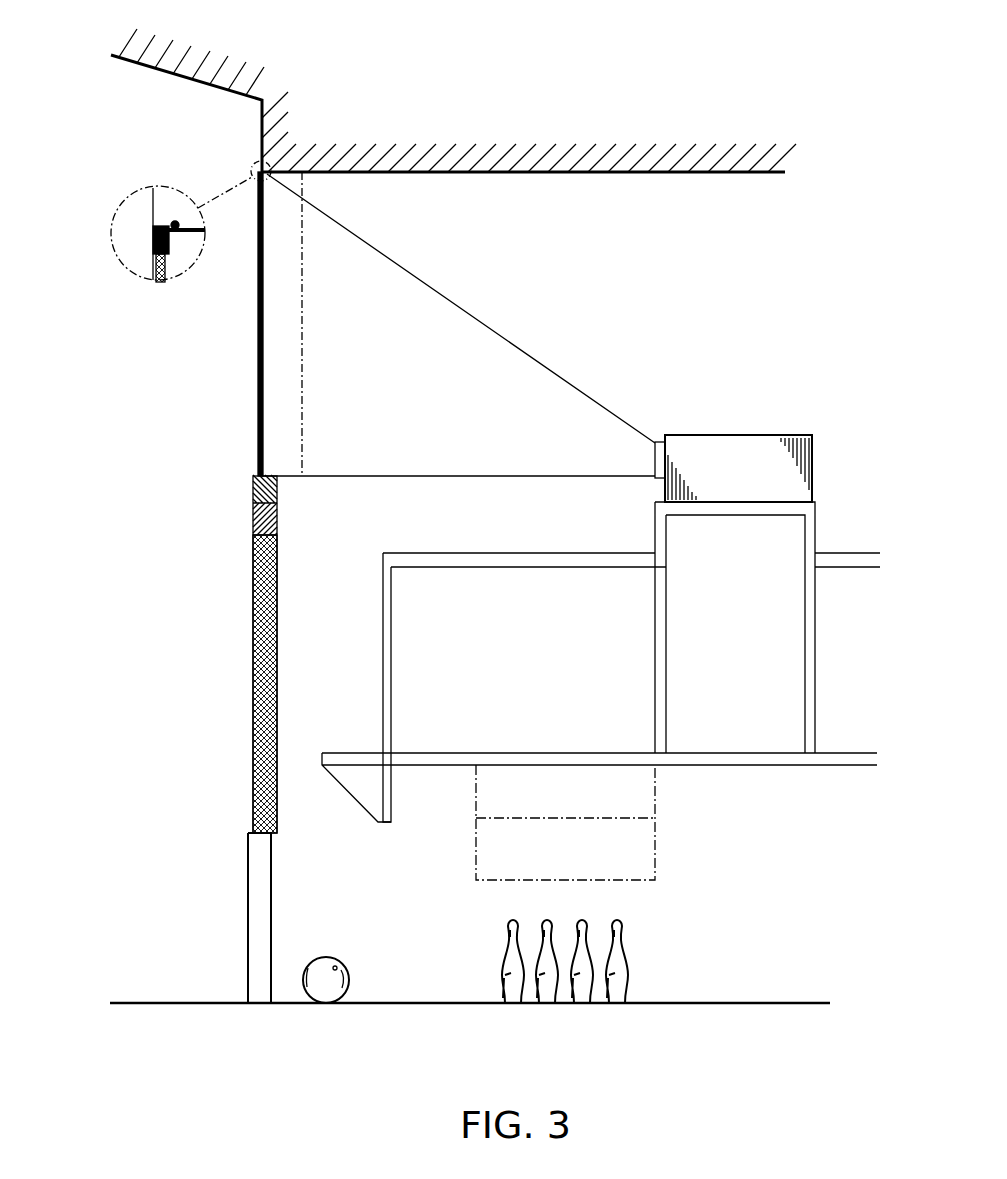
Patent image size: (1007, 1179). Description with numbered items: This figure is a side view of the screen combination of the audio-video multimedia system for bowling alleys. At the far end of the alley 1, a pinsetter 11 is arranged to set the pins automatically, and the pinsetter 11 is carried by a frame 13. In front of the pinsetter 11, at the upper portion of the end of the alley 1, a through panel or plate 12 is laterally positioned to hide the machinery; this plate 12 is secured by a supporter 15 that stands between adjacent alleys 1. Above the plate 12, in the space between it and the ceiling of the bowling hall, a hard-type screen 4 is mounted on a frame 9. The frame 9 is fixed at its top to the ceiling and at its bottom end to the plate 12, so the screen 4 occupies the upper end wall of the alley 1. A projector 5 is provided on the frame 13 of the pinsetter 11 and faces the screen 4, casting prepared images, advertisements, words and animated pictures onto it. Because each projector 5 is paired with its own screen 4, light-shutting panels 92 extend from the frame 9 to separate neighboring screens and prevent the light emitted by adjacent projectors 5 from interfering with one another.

The alley 1 is at (157, 1003).
The screen 4 is at (258, 342).
The projector 5 is at (733, 434).
The frame 9 is at (152, 238).
The pinsetter 11 is at (655, 810).
The through panel 12 is at (252, 683).
The frame of the pinsetter 13 is at (655, 633).
The supporter 15 is at (247, 865).
The light-shutting panel 92 is at (272, 174).